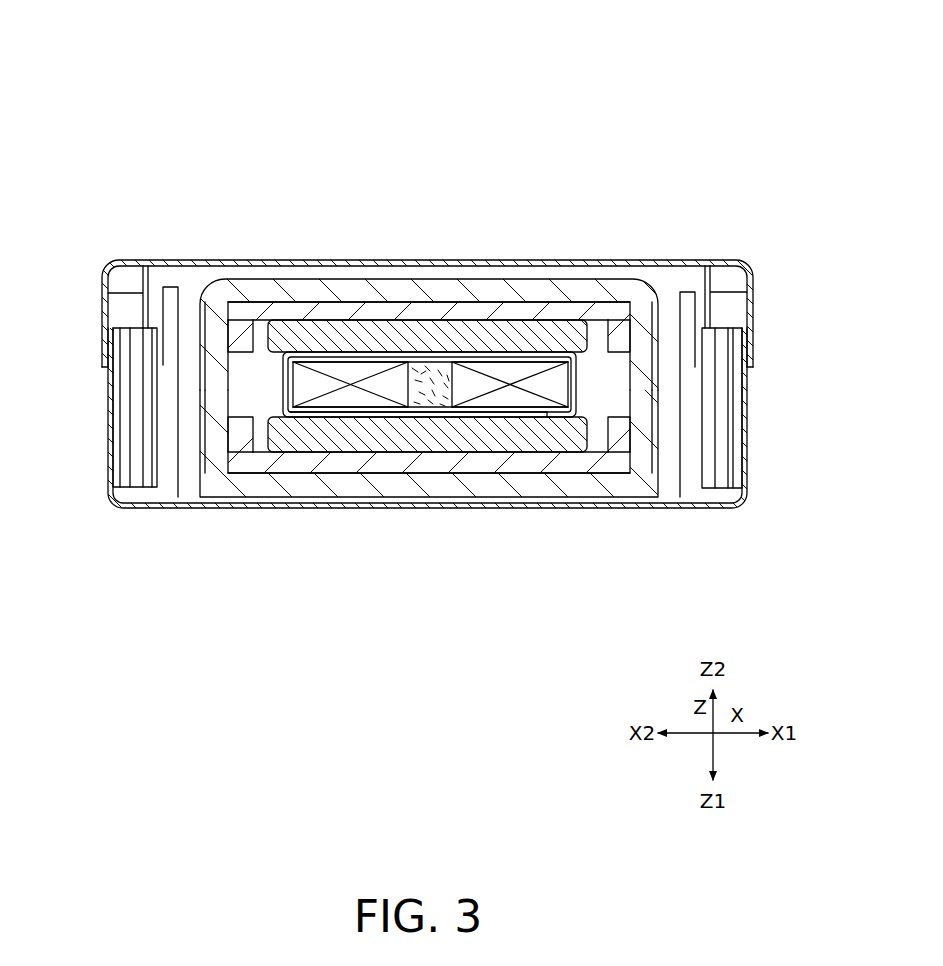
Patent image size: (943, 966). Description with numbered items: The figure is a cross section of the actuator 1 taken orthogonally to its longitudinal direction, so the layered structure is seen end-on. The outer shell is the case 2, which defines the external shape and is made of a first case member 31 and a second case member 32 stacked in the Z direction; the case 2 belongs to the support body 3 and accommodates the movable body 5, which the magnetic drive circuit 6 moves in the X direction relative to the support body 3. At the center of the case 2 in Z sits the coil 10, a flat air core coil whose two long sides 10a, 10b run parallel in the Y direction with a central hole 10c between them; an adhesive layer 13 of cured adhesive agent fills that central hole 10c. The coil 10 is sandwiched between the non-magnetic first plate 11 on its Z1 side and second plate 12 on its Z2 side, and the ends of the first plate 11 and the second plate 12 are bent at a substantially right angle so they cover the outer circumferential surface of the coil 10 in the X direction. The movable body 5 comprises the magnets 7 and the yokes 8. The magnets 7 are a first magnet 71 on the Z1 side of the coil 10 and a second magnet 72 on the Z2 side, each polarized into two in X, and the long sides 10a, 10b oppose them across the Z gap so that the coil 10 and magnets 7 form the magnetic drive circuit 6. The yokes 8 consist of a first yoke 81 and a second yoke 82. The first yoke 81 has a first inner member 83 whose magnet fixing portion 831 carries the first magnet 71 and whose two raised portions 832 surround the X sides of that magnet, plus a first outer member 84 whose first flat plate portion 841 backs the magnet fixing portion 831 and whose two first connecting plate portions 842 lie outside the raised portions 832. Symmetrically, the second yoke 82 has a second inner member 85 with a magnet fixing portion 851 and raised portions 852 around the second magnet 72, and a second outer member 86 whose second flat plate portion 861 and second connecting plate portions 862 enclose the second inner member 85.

The actuator 1 is at (112, 83).
The case 2 is at (460, 373).
The support body 3 is at (97, 259).
The movable body 5 is at (262, 274).
The magnetic drive circuit 6 is at (575, 155).
The magnets 7 is at (465, 185).
The yokes 8 is at (424, 387).
The coil 10 is at (520, 372).
The long side 10a is at (512, 400).
The long side 10b is at (400, 400).
The central hole 10c is at (432, 395).
The first plate 11 is at (356, 408).
The second plate 12 is at (378, 355).
The adhesive layer 13 is at (430, 413).
The first case member 31 is at (698, 506).
The second case member 32 is at (683, 262).
The first magnet 71 is at (492, 436).
The second magnet 72 is at (478, 330).
The first yoke 81 is at (497, 600).
The second yoke 82 is at (265, 172).
The first inner member 83 is at (553, 474).
The first outer member 84 is at (525, 487).
The second inner member 85 is at (305, 293).
The second outer member 86 is at (345, 290).
The magnet fixing portion 831 is at (300, 462).
The raised portions 832 is at (240, 435).
The first flat plate portion 841 is at (590, 487).
The first connecting plate portions 842 is at (190, 390).
The magnet fixing portion 851 is at (440, 303).
The raised portions 852 is at (236, 338).
The second flat plate portion 861 is at (587, 292).
The second connecting plate portions 862 is at (210, 368).